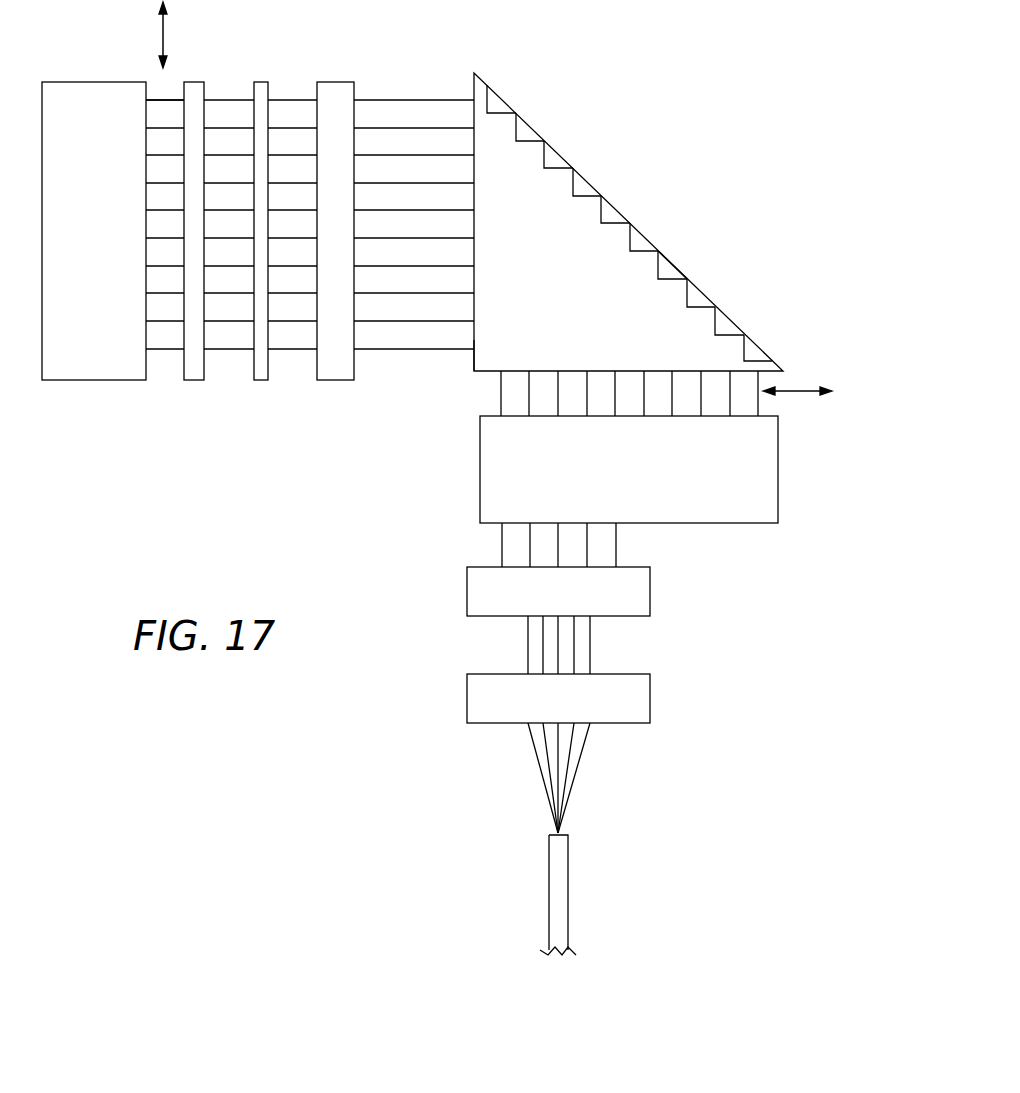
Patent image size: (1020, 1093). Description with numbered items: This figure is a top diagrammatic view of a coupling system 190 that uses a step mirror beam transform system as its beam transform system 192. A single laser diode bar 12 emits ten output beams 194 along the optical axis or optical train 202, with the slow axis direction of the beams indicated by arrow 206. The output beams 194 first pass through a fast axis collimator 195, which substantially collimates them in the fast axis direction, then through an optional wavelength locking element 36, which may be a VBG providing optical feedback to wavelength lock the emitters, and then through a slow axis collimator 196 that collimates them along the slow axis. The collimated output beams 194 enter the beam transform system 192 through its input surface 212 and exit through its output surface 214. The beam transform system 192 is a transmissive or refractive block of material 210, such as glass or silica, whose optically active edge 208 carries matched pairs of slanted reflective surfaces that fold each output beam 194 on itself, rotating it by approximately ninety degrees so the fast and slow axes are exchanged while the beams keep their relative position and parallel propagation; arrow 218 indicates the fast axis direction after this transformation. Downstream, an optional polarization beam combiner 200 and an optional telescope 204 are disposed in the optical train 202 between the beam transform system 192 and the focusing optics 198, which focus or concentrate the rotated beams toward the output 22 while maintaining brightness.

The bar 12 is at (100, 240).
The optical fiber 22 is at (569, 876).
The wavelength locking element 36 is at (261, 382).
The coupling system 190 is at (366, 450).
The beam transform system 192 is at (628, 222).
The output beams 194 is at (165, 100).
The fast axis collimator 195 is at (194, 83).
The slow axis collimator 196 is at (335, 82).
The focusing optics 198 is at (650, 700).
The beam combiner 200 is at (713, 524).
The optical train 202 is at (414, 100).
The telescope 204 is at (650, 590).
The arrow 206 is at (162, 33).
The optically active edge 208 is at (557, 168).
The block of material 210 is at (643, 271).
The input surface 212 is at (470, 358).
The output surface 214 is at (480, 372).
The arrow 218 is at (797, 393).